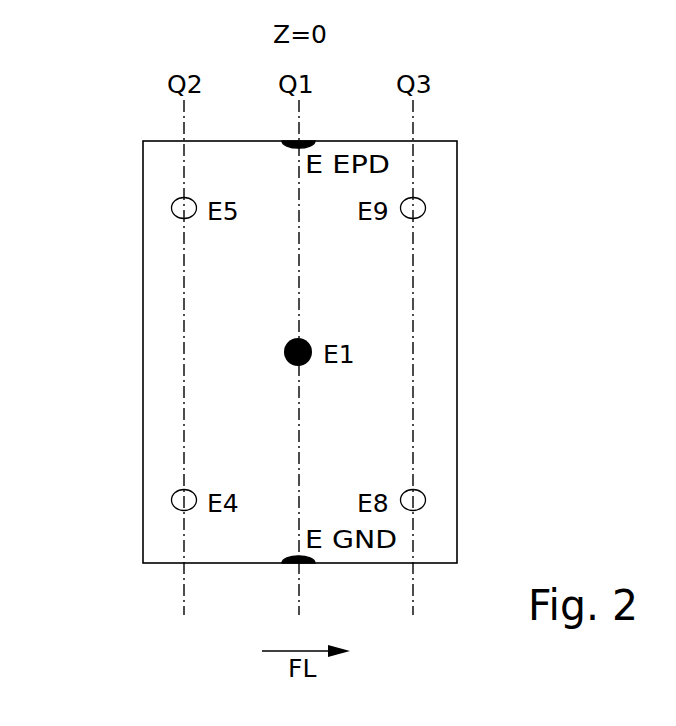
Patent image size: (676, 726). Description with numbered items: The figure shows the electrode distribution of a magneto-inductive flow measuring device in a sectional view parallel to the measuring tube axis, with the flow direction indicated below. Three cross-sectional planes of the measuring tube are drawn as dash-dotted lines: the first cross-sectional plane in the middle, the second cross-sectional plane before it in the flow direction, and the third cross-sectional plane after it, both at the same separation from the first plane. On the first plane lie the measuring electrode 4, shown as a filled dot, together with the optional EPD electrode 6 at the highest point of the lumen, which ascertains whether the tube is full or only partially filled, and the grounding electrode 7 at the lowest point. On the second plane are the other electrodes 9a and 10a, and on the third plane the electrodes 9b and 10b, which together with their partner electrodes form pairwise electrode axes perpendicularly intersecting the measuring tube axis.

The measuring electrode 4 is at (310, 338).
The EPD electrode 6 is at (306, 141).
The grounding electrode 7 is at (307, 565).
The electrode 9a is at (171, 208).
The electrode 9b is at (426, 208).
The electrode 10a is at (171, 500).
The electrode 10b is at (426, 500).